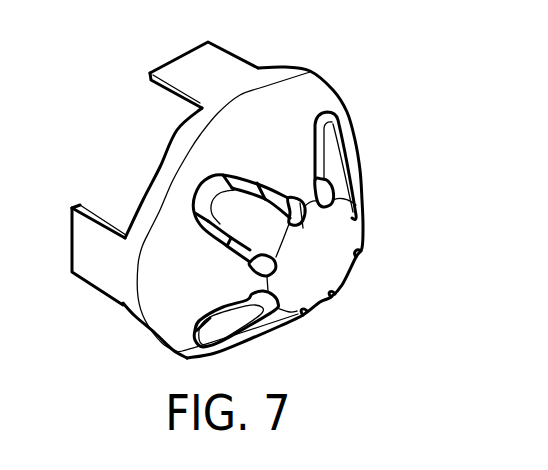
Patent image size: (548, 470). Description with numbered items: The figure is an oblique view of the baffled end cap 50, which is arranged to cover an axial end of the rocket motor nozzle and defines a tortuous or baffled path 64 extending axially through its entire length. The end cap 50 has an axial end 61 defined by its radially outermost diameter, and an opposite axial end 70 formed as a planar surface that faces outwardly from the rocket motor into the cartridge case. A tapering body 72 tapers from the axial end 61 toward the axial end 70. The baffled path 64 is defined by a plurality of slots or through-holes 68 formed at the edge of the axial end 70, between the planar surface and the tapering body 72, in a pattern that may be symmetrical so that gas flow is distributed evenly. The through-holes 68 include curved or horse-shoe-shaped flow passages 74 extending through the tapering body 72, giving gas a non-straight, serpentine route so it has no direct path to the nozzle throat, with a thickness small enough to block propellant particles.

The end cap 50 is at (340, 169).
The axial end 61 is at (157, 177).
The baffled path 64 is at (320, 117).
The through-holes 68 is at (264, 266).
The axial end 70 is at (322, 257).
The tapering body 72 is at (273, 115).
The flow passages 74 is at (196, 333).